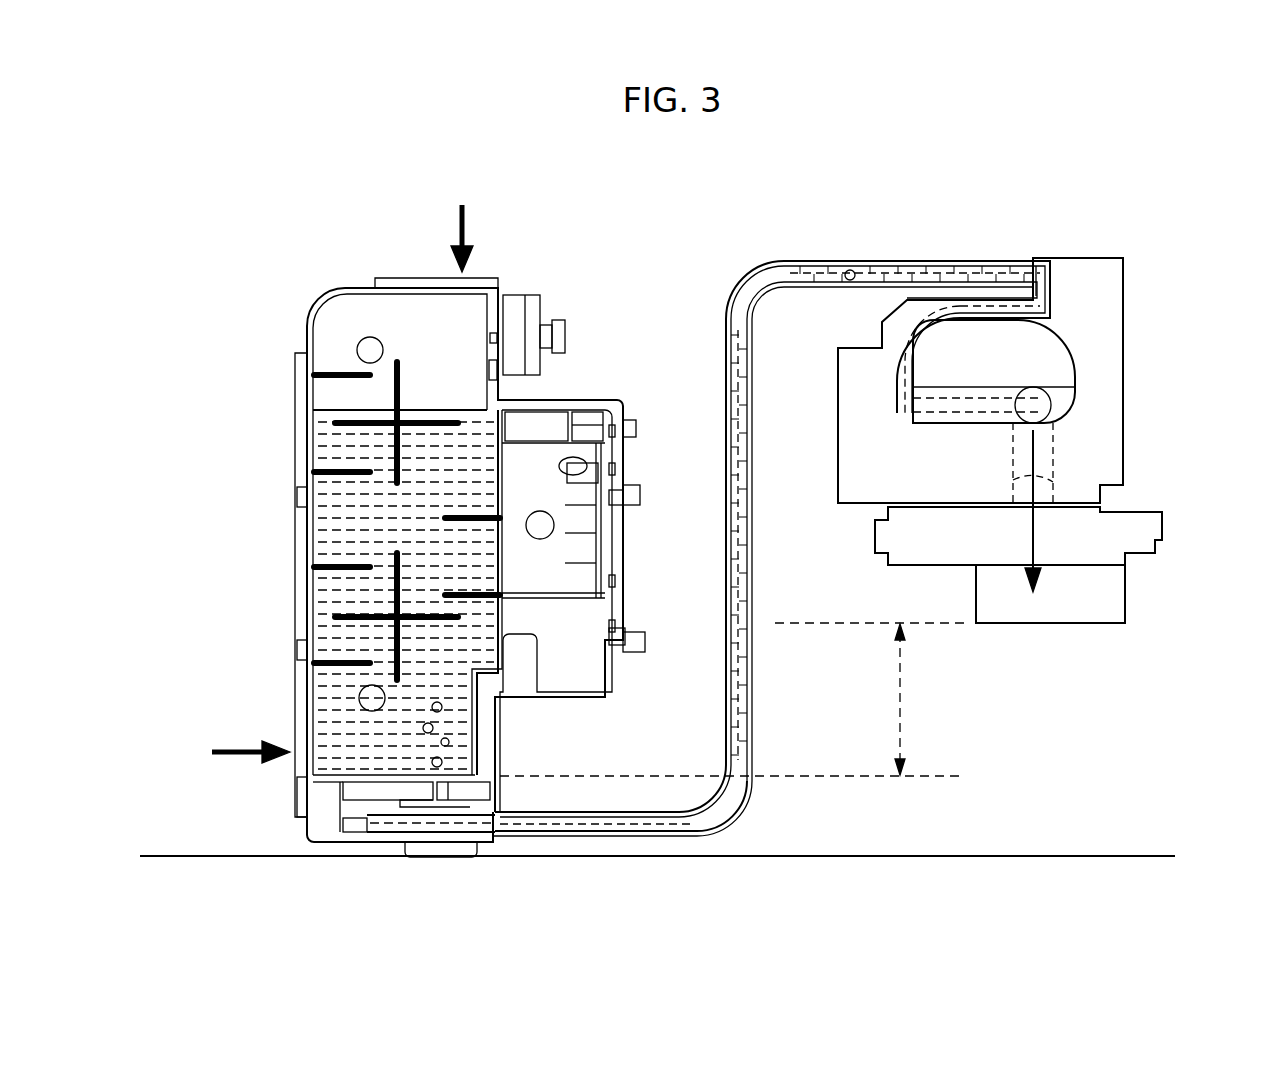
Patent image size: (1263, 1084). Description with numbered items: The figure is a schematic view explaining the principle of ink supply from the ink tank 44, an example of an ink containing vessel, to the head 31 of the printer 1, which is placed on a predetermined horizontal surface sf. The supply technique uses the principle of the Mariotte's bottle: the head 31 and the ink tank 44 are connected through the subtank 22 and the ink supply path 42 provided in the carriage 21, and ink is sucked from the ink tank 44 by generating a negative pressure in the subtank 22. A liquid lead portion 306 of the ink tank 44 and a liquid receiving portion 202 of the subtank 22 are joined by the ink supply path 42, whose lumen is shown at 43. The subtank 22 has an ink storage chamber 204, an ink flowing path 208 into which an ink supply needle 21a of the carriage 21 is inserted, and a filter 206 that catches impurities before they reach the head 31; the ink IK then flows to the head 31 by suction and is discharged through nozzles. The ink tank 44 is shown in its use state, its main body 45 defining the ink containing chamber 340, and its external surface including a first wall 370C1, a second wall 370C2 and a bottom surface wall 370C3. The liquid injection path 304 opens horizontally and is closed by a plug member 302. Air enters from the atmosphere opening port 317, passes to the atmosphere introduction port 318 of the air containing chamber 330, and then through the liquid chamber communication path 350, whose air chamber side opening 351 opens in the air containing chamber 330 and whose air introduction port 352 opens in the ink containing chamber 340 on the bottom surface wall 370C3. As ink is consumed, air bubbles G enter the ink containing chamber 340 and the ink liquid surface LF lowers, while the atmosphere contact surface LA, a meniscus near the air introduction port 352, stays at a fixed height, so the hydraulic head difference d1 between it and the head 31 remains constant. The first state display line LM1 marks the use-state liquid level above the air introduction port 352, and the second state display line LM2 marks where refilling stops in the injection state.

The printer 1 is at (952, 153).
The carriage 21 is at (1163, 525).
The ink supply needle 21a is at (1058, 495).
The subtank 22 is at (1125, 275).
The head 31 is at (1128, 595).
The ink supply path 42 is at (755, 668).
The tube lumen 43 is at (850, 270).
The ink tank 44 is at (622, 240).
The main body 45 is at (345, 288).
The liquid receiving portion 202 is at (1020, 278).
The ink storage chamber 204 is at (1052, 352).
The filter 206 is at (1038, 405).
The ink flowing path 208 is at (1058, 445).
The plug member 302 is at (567, 337).
The liquid injection path 304 is at (515, 295).
The liquid lead portion 306 is at (357, 832).
The atmosphere opening port 317 is at (637, 430).
The atmosphere introduction port 318 is at (590, 468).
The air containing chamber 330 is at (590, 610).
The ink containing chamber 340 is at (325, 395).
The liquid chamber communication path 350 is at (477, 800).
The air chamber side opening 351 is at (500, 780).
The air introduction port 352 is at (433, 775).
The first wall 370C1 is at (307, 555).
The second wall 370C2 is at (388, 290).
The bottom surface wall 370C3 is at (352, 775).
The air bubbles G is at (443, 707).
The ink liquid surface LF is at (430, 410).
The atmosphere contact surface LA is at (443, 778).
The first state display line LM1 is at (226, 752).
The second state display line LM2 is at (461, 224).
The ink IK is at (1033, 527).
The hydraulic head difference d1 is at (732, 699).
The horizontal surface sf is at (195, 857).